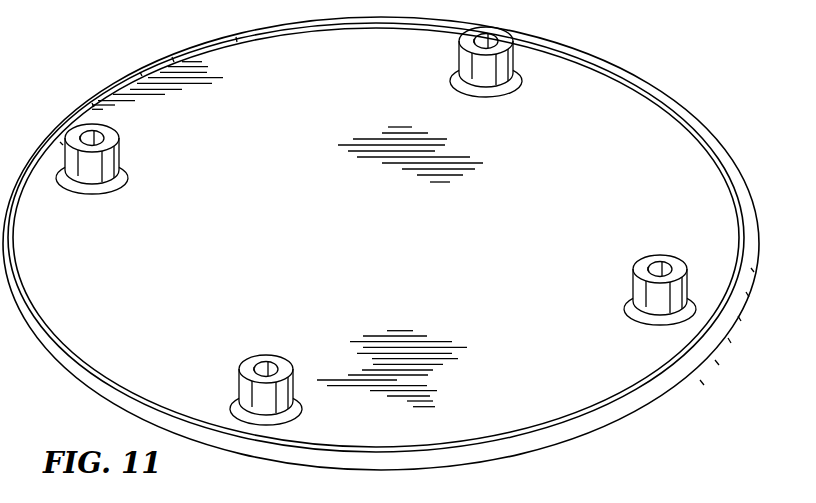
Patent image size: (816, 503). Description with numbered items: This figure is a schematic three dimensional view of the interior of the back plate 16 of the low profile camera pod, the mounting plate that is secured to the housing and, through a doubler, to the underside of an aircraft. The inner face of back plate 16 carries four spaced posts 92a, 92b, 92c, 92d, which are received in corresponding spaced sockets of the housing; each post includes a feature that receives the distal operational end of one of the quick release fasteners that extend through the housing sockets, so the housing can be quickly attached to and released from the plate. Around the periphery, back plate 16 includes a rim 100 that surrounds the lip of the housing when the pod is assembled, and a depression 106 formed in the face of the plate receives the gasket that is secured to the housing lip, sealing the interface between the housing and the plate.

The back plate 16 is at (603, 150).
The post 92a is at (120, 145).
The post 92b is at (462, 62).
The post 92c is at (633, 270).
The post 92d is at (240, 372).
The rim 100 is at (538, 443).
The depression 106 is at (42, 318).